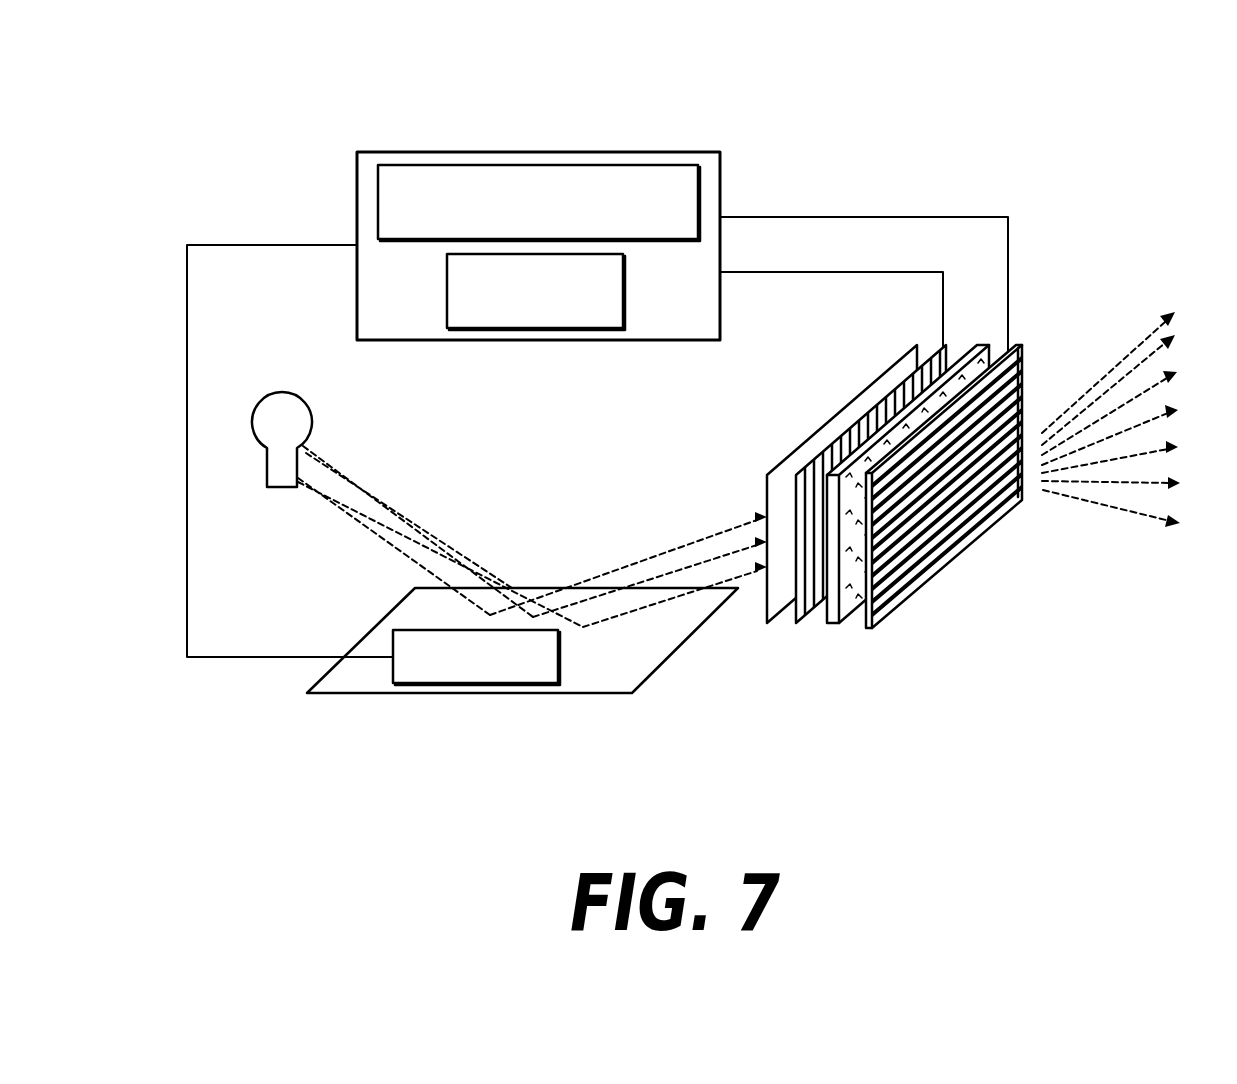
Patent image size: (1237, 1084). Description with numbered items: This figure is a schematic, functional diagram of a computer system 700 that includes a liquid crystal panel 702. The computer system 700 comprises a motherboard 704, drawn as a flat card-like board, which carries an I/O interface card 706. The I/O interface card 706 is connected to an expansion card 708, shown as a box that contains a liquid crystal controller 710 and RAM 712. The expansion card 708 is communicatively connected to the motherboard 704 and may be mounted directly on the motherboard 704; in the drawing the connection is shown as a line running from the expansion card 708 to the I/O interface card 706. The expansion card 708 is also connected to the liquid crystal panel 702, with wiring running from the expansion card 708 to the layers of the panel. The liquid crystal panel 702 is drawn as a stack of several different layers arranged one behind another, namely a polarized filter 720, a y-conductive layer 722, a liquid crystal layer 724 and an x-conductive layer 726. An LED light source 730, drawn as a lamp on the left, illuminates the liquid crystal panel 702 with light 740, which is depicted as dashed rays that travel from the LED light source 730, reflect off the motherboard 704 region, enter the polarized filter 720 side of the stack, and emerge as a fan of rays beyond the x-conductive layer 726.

The computer system 700 is at (1043, 721).
The liquid crystal panel 702 is at (935, 434).
The motherboard 704 is at (602, 677).
The I/O interface card 706 is at (428, 670).
The expansion card 708 is at (364, 165).
The liquid crystal controller 710 is at (660, 190).
The RAM 712 is at (583, 308).
The polarized filter 720 is at (872, 398).
The y-conductive layer 722 is at (963, 346).
The liquid crystal layer 724 is at (988, 350).
The x-conductive layer 726 is at (1022, 373).
The LED light source 730 is at (308, 401).
The light 740 is at (687, 544).